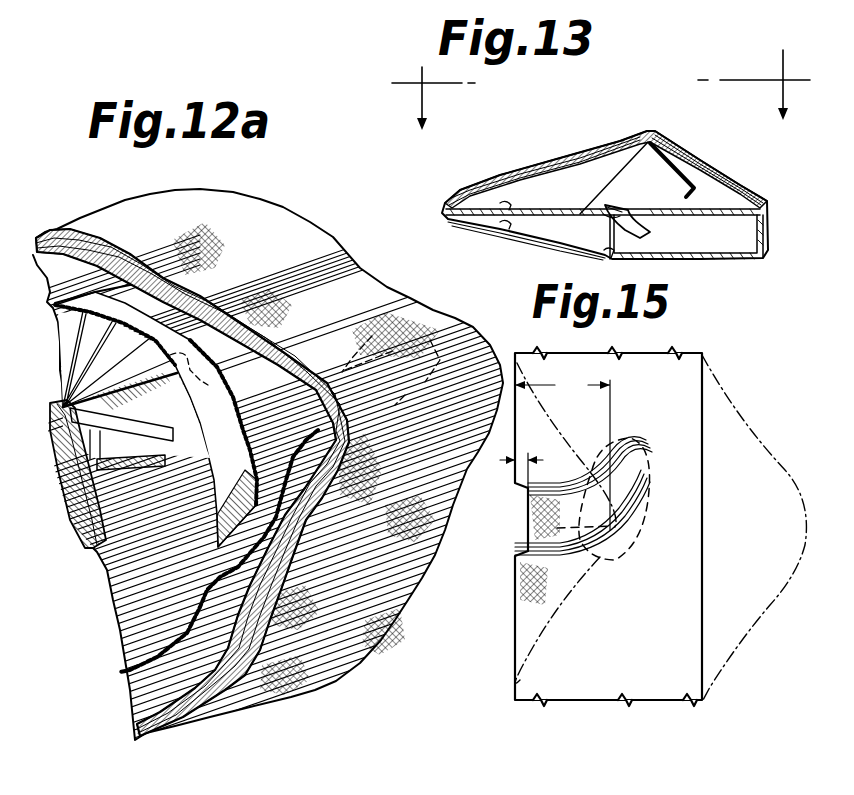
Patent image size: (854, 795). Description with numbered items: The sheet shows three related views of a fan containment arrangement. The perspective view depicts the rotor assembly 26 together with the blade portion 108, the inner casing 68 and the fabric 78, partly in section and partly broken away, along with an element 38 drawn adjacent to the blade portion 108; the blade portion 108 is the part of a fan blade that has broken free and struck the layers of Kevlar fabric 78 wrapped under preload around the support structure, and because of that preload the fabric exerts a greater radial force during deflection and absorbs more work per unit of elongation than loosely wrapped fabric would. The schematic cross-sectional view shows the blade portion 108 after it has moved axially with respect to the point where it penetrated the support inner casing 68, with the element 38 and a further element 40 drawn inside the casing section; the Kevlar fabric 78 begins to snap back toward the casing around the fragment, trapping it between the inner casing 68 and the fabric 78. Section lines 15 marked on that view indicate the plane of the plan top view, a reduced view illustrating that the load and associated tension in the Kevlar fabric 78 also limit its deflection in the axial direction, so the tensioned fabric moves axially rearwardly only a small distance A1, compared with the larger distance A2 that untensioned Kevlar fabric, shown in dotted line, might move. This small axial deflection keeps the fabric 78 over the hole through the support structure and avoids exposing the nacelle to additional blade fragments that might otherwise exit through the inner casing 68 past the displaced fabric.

In FIG. 12a, the fabric 78 is at (286, 267).
In FIG. 12a, the blade portion 108 is at (328, 424).
In FIG. 13, the blade portion 108 is at (613, 188).
In FIG. 12a, the retaining bracket 38 is at (160, 438).
In FIG. 13, the retaining bracket 38 is at (652, 181).
In FIG. 12a, the inner casing 68 is at (214, 530).
In FIG. 12a, the rotor assembly 26 is at (93, 530).
In FIG. 13, the hook clip 40 is at (607, 223).
In FIG. 13, the section lines 15- 15 is at (601, 106).
In FIG. 15, the small axial distance A1 is at (532, 469).
In FIG. 15, the untensioned axial distance A2 is at (562, 452).